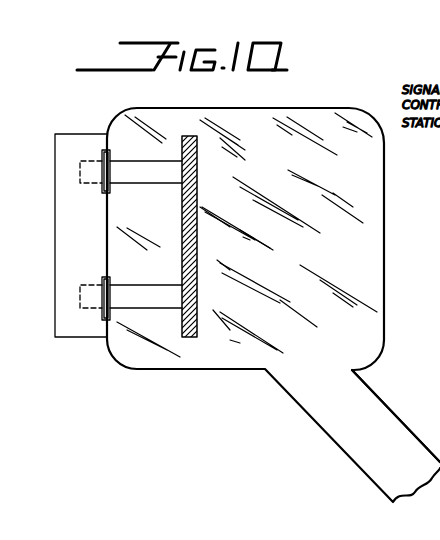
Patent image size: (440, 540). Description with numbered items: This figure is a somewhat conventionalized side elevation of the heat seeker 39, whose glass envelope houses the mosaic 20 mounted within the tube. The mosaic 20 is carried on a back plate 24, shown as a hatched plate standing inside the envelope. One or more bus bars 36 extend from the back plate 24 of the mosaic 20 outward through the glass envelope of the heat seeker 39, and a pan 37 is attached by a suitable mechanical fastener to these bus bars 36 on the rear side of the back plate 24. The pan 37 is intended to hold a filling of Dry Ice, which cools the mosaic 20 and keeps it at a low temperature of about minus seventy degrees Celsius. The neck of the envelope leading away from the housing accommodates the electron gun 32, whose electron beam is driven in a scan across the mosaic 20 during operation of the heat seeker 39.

The mosaic 20 is at (197, 237).
The back plate 24 is at (182, 216).
The electron gun 32 is at (358, 390).
The bus bar 36 is at (165, 272).
The pan 37 is at (85, 122).
The heat seeker 39 is at (377, 297).